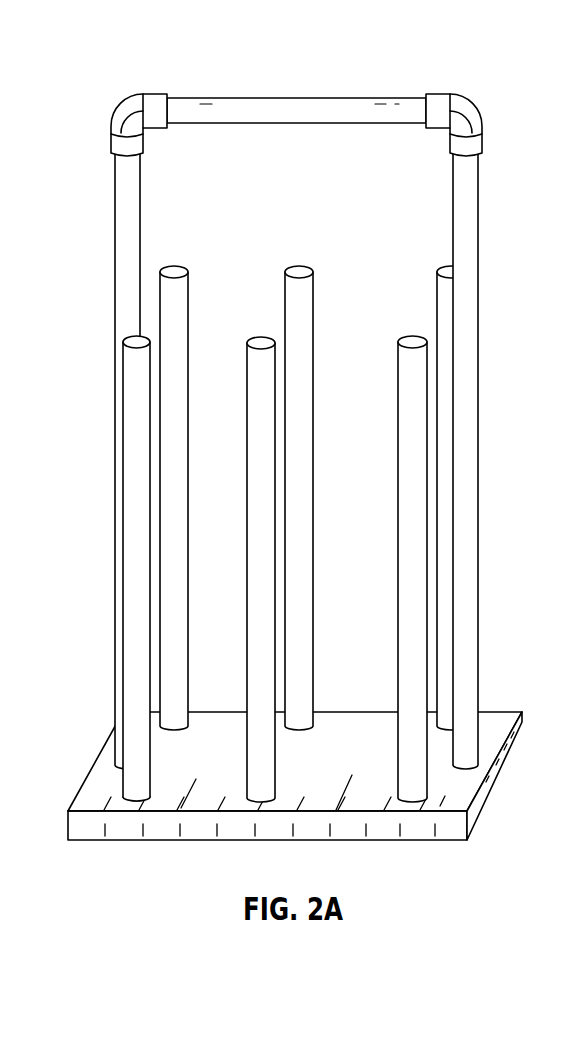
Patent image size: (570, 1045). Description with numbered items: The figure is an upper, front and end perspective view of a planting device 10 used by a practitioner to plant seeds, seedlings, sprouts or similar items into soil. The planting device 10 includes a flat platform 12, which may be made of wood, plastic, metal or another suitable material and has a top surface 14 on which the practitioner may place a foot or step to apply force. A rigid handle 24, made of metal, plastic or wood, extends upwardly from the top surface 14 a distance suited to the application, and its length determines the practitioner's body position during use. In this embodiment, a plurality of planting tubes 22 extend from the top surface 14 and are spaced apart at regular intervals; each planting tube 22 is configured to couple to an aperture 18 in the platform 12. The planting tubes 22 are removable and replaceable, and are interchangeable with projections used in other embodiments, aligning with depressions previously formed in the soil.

The planting device 10 is at (117, 77).
The platform 12 is at (449, 820).
The top surface 14 is at (192, 805).
The aperture 18 is at (121, 797).
The planting tube 22 is at (279, 444).
The handle 24 is at (468, 112).